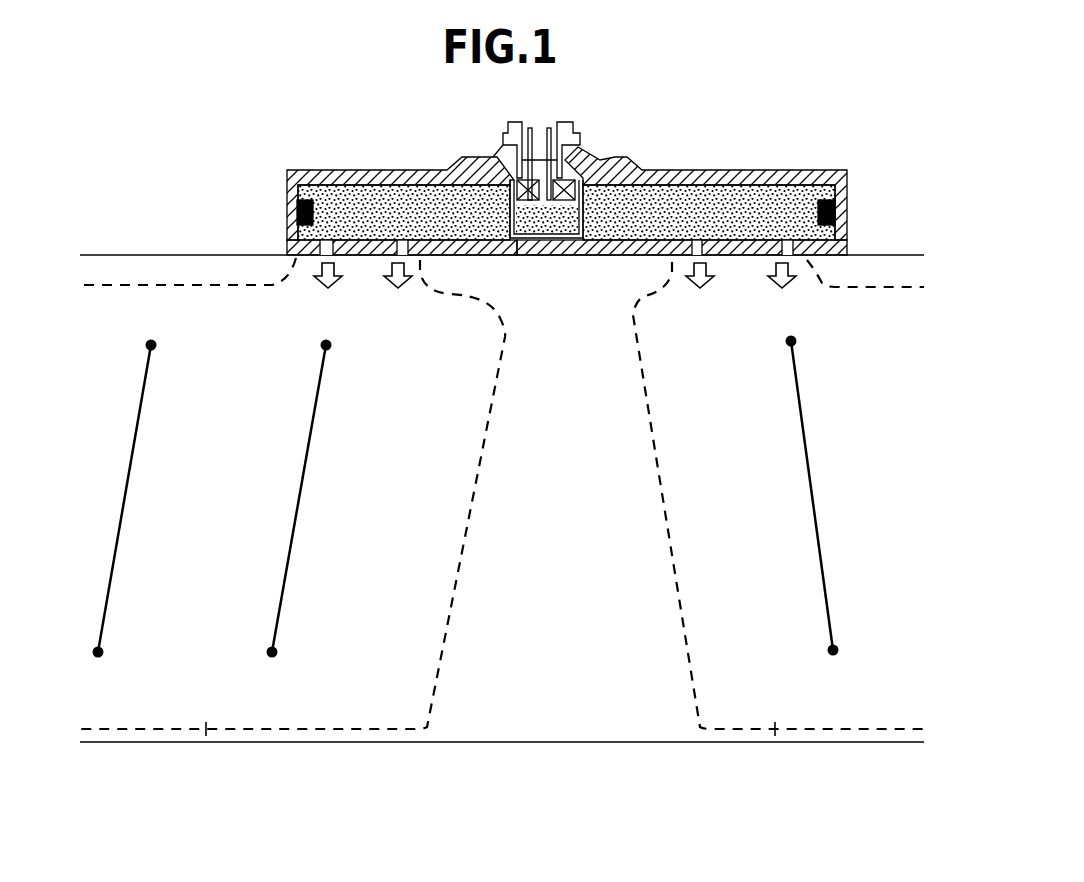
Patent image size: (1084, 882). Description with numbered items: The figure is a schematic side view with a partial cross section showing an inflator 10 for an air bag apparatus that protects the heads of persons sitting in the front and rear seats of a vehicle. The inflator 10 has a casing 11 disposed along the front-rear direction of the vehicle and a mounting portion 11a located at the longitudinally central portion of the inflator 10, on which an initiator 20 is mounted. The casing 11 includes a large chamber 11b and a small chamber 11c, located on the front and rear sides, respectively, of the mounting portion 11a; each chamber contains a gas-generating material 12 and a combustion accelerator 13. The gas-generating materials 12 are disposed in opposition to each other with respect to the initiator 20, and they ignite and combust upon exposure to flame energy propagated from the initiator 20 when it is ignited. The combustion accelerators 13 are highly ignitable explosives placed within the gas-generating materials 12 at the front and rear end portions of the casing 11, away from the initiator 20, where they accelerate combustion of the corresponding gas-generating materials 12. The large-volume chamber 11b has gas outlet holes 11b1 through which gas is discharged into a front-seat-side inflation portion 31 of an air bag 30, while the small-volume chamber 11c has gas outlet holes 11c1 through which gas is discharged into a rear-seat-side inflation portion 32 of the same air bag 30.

The inflator 10 is at (552, 212).
The casing 11 is at (538, 221).
The mounting portion 11a is at (669, 197).
The large chamber 11b is at (787, 178).
The small chamber 11c is at (332, 178).
The gas outlet holes 11b1 is at (770, 265).
The gas outlet holes 11c1 is at (338, 265).
The gas-generating material 12 is at (400, 190).
The combustion accelerator 13 is at (300, 212).
The initiator 20 is at (578, 143).
The air bag 30 is at (503, 752).
The front-seat-side inflation portion 31 is at (775, 722).
The rear-seat-side inflation portion 32 is at (205, 722).